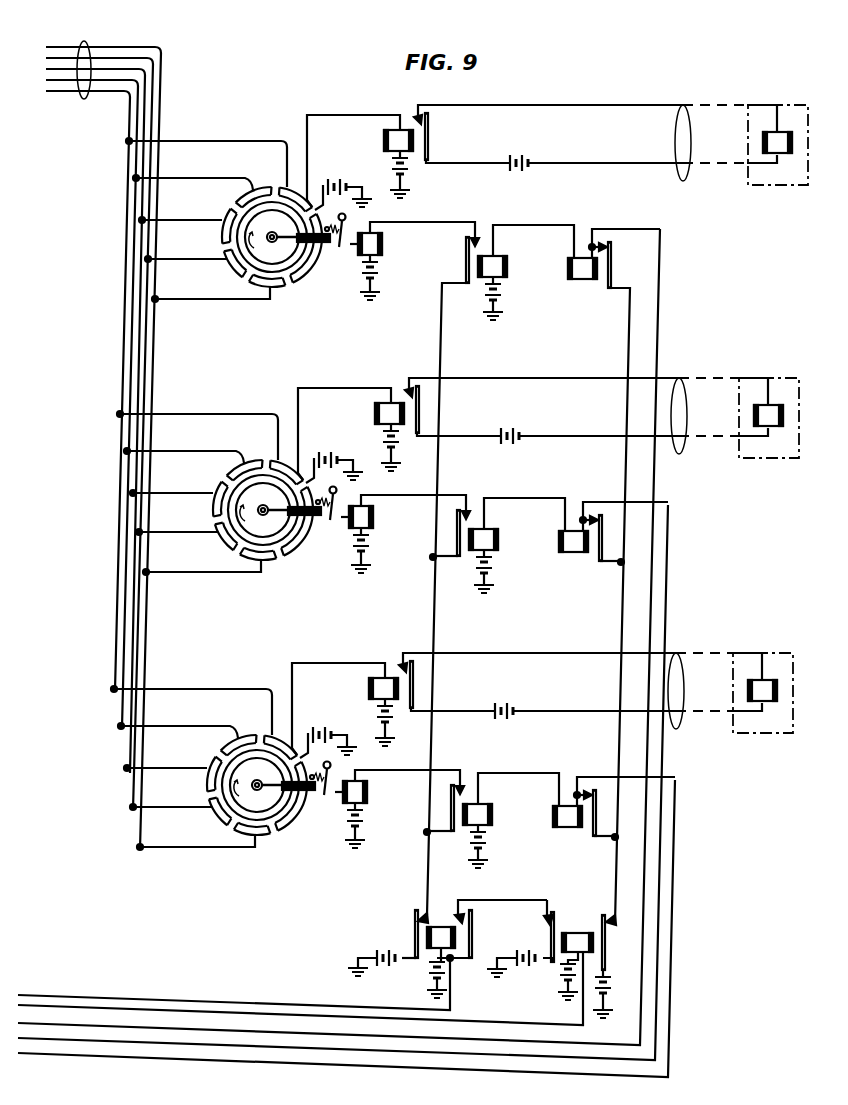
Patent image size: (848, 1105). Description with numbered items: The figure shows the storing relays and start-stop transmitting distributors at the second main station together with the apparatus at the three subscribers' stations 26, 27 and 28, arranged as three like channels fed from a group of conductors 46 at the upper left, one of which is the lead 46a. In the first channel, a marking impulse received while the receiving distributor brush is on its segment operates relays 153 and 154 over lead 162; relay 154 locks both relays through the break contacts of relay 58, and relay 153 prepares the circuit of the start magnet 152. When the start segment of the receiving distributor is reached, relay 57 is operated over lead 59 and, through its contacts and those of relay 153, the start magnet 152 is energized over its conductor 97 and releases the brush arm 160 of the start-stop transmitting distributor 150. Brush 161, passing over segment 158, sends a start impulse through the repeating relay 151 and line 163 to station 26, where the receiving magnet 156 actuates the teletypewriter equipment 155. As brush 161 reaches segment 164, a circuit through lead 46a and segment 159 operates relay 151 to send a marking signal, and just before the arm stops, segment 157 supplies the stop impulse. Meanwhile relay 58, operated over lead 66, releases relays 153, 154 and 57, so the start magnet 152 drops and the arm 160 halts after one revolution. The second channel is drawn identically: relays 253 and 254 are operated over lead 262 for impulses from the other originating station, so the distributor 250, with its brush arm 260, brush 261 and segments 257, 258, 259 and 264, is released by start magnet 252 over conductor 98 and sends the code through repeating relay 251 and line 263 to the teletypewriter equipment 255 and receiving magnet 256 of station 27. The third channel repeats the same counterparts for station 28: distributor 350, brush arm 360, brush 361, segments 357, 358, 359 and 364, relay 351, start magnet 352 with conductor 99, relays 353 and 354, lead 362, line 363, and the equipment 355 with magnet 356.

The conductors 46 is at (82, 99).
The lead 46a is at (62, 46).
The subscriber's station 26 is at (734, 175).
The subscriber's station 27 is at (729, 445).
The subscriber's station 28 is at (721, 720).
The relay 57 is at (436, 926).
The relay 58 is at (571, 932).
The lead 59 is at (62, 996).
The lead 66 is at (48, 1007).
The conductor 97 is at (436, 222).
The conductor 98 is at (415, 516).
The conductor 99 is at (409, 792).
The start-stop transmitting distributor 150 is at (255, 213).
The repeating relay 151 is at (384, 138).
The start magnet 152 is at (382, 241).
The relay 153 is at (500, 258).
The relay 154 is at (568, 276).
The teletypewriter equipment 155 is at (795, 104).
The receiving magnet 156 is at (763, 145).
The segment 157 is at (323, 185).
The segment 158 is at (297, 275).
The segment 159 is at (250, 263).
The brush arm 160 is at (288, 243).
The brush 161 is at (338, 246).
The lead 162 is at (103, 1028).
The line 163 is at (683, 181).
The segment 164 is at (283, 293).
The distributor 250 is at (262, 493).
The relay 251 is at (351, 434).
The relay 252 is at (379, 539).
The relay 253 is at (517, 545).
The relay 254 is at (602, 542).
The remote unit 255 is at (769, 403).
The relay 256 is at (738, 407).
The battery 257 is at (334, 454).
The contact segment 258 is at (299, 566).
The contact segment 259 is at (213, 550).
The rotary contact arm 260 is at (284, 522).
The contact switch 261 is at (324, 519).
The lead 262 is at (48, 1040).
The cable 263 is at (689, 431).
The contact segment 264 is at (211, 585).
The rotary switch 350 is at (256, 768).
The relay 351 is at (345, 709).
The relay 352 is at (372, 814).
The relay 353 is at (511, 820).
The relay 354 is at (603, 819).
The remote unit 355 is at (763, 678).
The relay 356 is at (732, 682).
The battery 357 is at (327, 730).
The contact segment 358 is at (294, 836).
The contact segment 359 is at (210, 831).
The rotary contact arm 360 is at (278, 797).
The contact switch 361 is at (321, 794).
The conductor 362 is at (104, 1055).
The cable 363 is at (689, 706).
The contact segment 364 is at (202, 861).